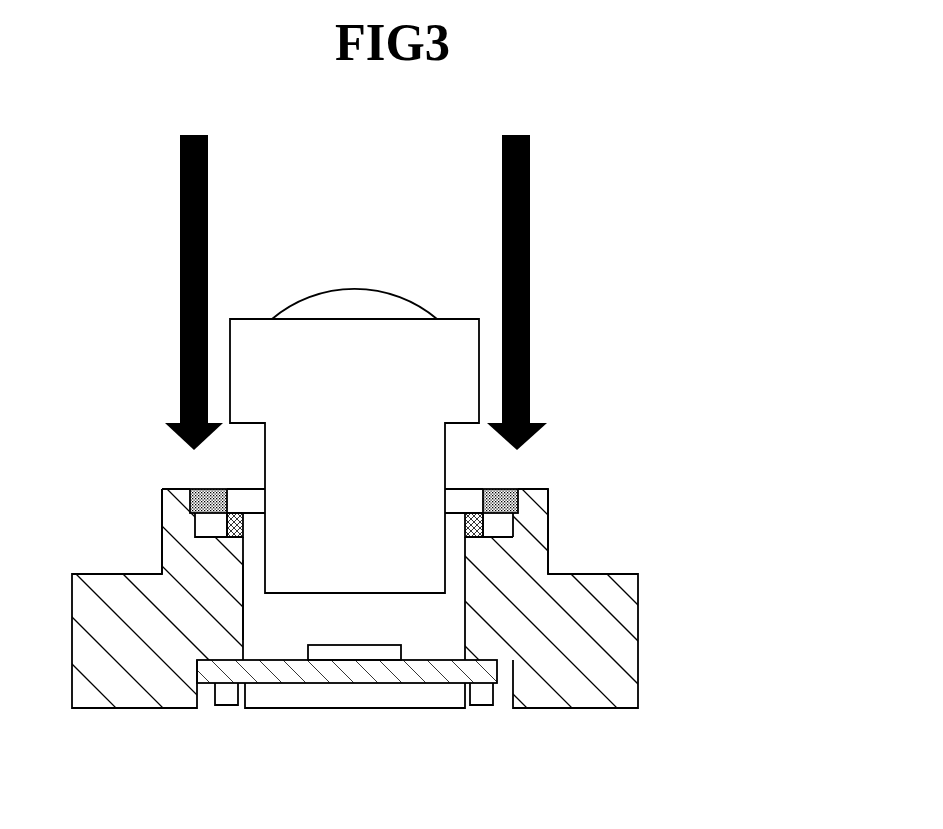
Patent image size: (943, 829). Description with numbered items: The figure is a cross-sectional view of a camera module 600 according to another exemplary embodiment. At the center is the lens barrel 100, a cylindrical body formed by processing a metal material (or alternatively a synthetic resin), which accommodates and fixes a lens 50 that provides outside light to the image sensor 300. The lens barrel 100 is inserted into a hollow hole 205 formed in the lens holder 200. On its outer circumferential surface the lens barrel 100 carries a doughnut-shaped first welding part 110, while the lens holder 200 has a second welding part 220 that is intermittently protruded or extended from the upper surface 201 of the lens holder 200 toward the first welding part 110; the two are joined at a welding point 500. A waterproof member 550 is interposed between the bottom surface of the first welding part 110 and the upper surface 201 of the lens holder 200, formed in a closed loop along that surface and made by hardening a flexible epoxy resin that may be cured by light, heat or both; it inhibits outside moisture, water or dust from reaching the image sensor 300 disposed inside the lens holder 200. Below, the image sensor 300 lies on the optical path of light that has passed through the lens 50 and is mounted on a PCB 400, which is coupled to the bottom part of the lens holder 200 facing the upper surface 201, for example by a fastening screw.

The lens 50 is at (392, 302).
The lens barrel 100 is at (308, 349).
The first welding part 110 is at (472, 498).
The lens holder 200 is at (403, 586).
The upper surface 201 is at (217, 537).
The hollow hole 205 is at (266, 622).
The second welding part 220 is at (168, 502).
The image sensor 300 is at (332, 650).
The PCB 400 is at (425, 689).
The welding point 500 is at (523, 493).
The waterproof member 550 is at (478, 527).
The camera module 600 is at (614, 247).